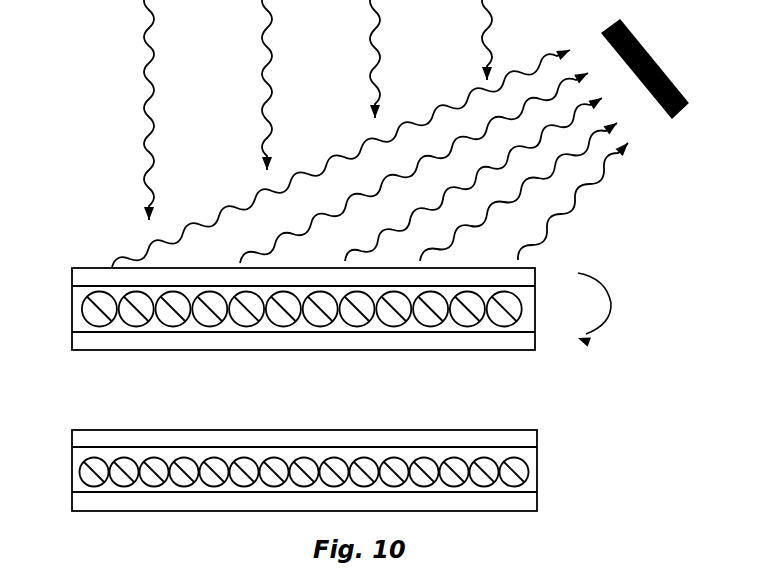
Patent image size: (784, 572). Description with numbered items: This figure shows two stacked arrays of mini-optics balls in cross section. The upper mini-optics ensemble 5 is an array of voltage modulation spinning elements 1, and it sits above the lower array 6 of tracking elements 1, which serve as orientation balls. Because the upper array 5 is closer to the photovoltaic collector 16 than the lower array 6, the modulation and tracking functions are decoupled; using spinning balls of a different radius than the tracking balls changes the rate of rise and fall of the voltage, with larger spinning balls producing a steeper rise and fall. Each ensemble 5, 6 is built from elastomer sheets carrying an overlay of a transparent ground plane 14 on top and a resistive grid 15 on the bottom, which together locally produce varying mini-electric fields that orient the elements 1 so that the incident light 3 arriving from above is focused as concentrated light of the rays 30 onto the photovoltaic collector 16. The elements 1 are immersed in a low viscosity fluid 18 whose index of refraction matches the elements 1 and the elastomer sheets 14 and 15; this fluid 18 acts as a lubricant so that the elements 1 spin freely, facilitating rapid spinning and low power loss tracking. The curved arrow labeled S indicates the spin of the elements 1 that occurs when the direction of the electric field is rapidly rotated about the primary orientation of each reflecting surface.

The spinning reflecting element 1 is at (45, 323).
The incident light 3 is at (262, 30).
The rays of concentrated light 30 is at (380, 227).
The transparent ground plane 14 is at (540, 272).
The low viscosity fluid 18 is at (527, 296).
The resistive grid 15 is at (496, 340).
The photovoltaic collector 16 is at (636, 37).
The mini-optics ensemble of voltage modulation spinning elements 5 is at (674, 318).
The array of tracking elements 6 is at (637, 479).
The spin direction arrow S is at (605, 310).